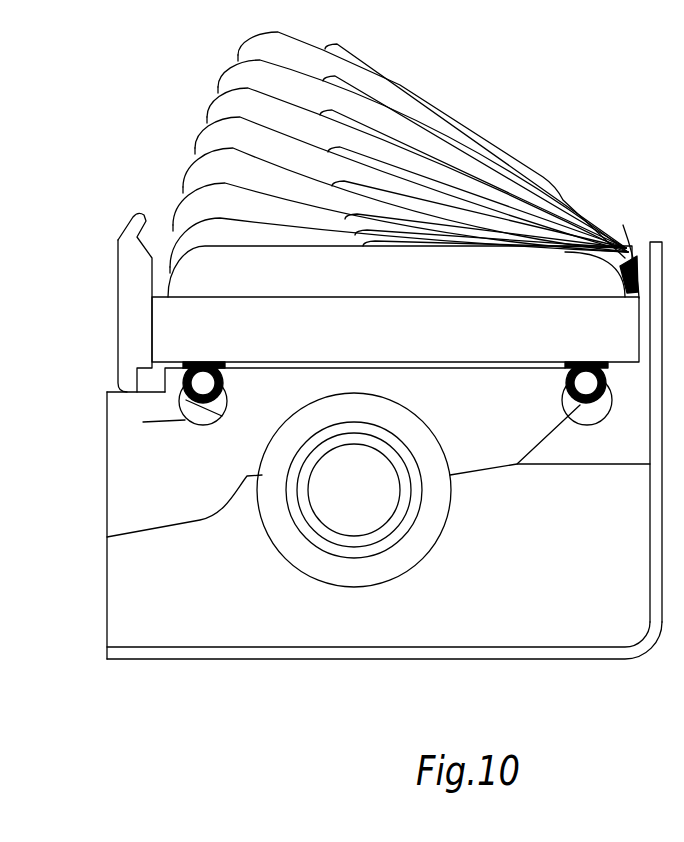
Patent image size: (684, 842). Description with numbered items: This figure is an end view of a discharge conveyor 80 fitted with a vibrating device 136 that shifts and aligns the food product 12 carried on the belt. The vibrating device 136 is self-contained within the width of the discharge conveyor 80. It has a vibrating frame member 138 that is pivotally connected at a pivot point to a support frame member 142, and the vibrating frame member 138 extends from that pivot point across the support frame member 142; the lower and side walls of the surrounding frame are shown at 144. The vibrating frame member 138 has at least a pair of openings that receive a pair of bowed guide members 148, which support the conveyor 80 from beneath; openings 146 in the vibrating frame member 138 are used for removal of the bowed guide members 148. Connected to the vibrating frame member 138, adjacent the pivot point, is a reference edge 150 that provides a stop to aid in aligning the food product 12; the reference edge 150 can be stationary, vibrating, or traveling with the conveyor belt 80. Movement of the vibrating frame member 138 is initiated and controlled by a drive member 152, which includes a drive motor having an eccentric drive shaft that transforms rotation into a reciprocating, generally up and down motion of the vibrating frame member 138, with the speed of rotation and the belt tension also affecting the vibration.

The food product 12 is at (385, 76).
The vibrating device 136 is at (403, 165).
The discharge conveyor 80 is at (167, 320).
The reference edge 150 is at (132, 218).
The vibrating frame member 138 is at (142, 517).
The support frame member 142 is at (175, 653).
The housing side wall 144 is at (647, 470).
The drive member 152 is at (422, 577).
The openings 146 is at (143, 422).
The bowed guide members 148 is at (207, 403).